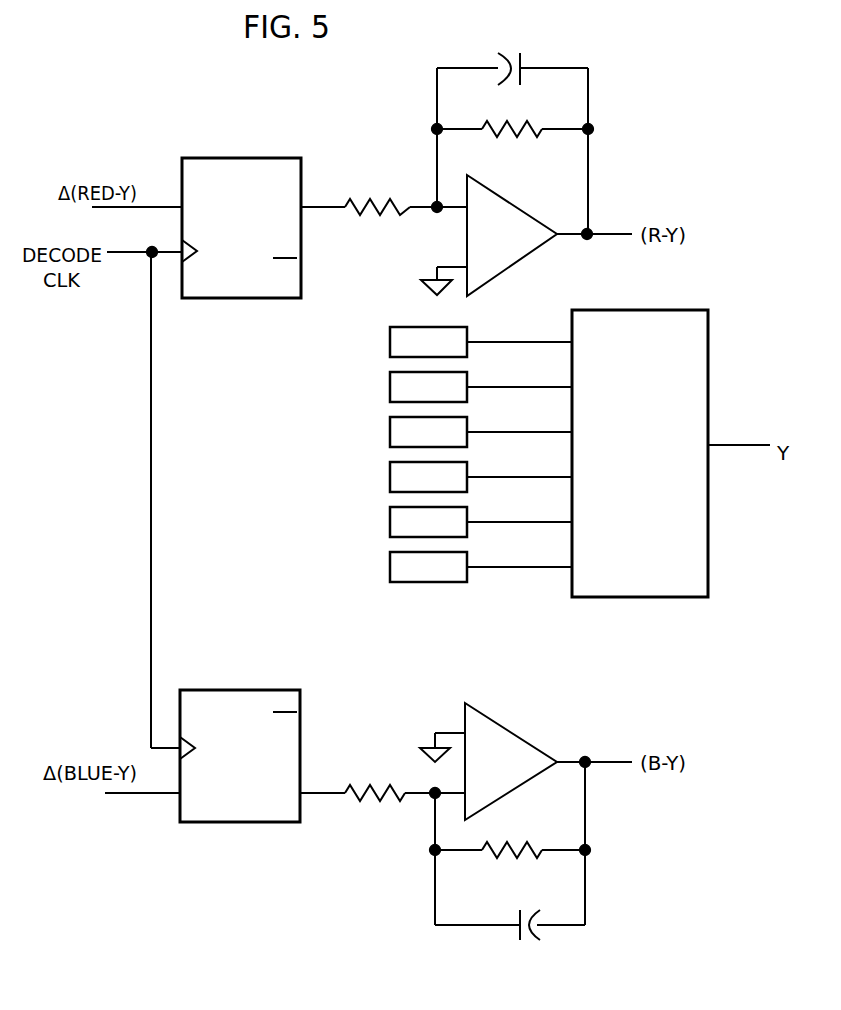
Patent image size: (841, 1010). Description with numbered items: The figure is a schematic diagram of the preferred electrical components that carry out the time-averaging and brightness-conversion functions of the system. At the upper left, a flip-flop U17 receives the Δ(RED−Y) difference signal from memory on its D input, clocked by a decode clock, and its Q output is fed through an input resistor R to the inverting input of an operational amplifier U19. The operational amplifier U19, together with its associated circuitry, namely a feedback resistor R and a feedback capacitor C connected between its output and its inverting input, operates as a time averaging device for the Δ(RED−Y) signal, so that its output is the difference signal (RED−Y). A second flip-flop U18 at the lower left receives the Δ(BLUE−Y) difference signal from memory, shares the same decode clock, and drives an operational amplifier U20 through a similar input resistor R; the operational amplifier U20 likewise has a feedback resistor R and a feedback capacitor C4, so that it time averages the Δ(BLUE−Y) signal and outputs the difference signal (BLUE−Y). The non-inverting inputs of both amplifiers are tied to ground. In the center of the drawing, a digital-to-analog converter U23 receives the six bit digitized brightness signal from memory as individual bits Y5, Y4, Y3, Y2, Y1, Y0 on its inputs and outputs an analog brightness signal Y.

The flip-flop U17 is at (241, 228).
The flip-flop U18 is at (240, 756).
The operational amplifier U19 is at (512, 235).
The operational amplifier U20 is at (511, 761).
The digital-to-analog converter U23 is at (640, 453).
The resistor R is at (443, 503).
The feedback capacitor C is at (510, 57).
The feedback capacitor C4 is at (527, 938).
The digitized brightness signal bit Y5 is at (481, 342).
The digitized brightness signal bit Y4 is at (481, 387).
The digitized brightness signal bit Y3 is at (481, 432).
The digitized brightness signal bit Y2 is at (481, 477).
The digitized brightness signal bit Y1 is at (481, 522).
The digitized brightness signal bit Y0 is at (481, 567).